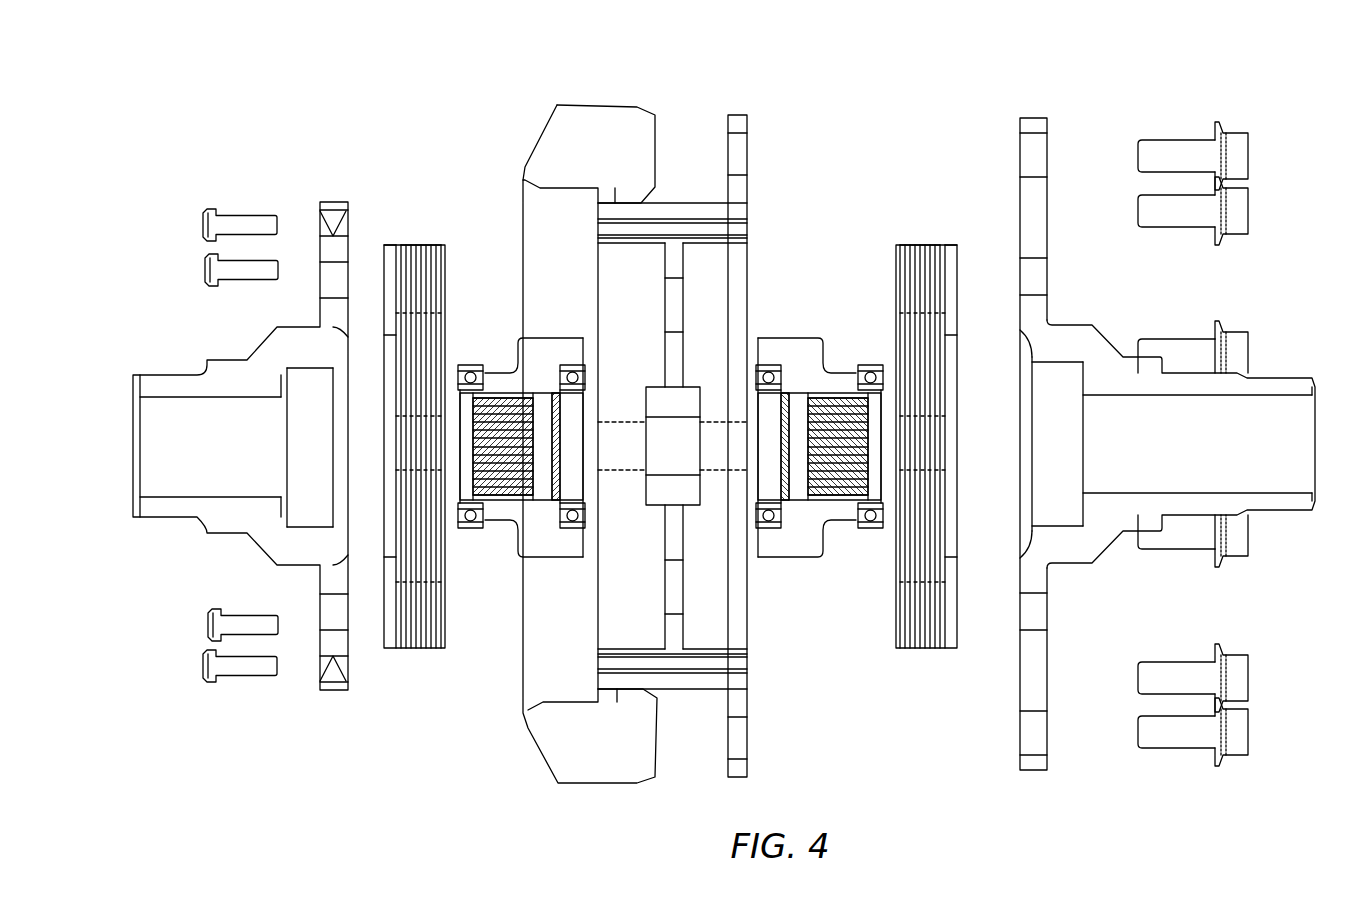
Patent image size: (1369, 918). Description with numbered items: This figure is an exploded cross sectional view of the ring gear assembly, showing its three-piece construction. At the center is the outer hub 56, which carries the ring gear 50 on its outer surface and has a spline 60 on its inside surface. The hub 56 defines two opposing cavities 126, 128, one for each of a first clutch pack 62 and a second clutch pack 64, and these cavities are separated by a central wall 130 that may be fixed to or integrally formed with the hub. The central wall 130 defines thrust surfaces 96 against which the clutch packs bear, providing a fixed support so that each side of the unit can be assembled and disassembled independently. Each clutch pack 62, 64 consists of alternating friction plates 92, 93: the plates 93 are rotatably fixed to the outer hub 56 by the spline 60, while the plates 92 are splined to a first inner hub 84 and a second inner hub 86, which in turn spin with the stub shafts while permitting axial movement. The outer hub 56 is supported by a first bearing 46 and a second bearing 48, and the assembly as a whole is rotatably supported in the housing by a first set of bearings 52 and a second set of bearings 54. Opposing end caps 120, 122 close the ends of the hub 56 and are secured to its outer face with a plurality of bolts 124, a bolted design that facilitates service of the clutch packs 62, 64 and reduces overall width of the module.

The ring gear 50 is at (585, 115).
The outer hub 56 is at (703, 202).
The spline 60 is at (723, 245).
The central wall 130 is at (673, 345).
The thrust surfaces 96 is at (660, 263).
The cavity 128 is at (712, 617).
The cavity 126 is at (622, 608).
The first inner hub 84 is at (512, 380).
The second inner hub 86 is at (802, 343).
The first bearing 46 is at (465, 532).
The first set of bearings 52 is at (572, 530).
The second set of bearings 54 is at (770, 530).
The second bearing 48 is at (868, 530).
The first clutch pack 62 is at (418, 660).
The second clutch pack 64 is at (922, 660).
The friction plates 92 is at (400, 245).
The friction plates 93 is at (425, 245).
The end cap 120 is at (332, 202).
The end cap 122 is at (1033, 117).
The bolts 124 is at (245, 223).